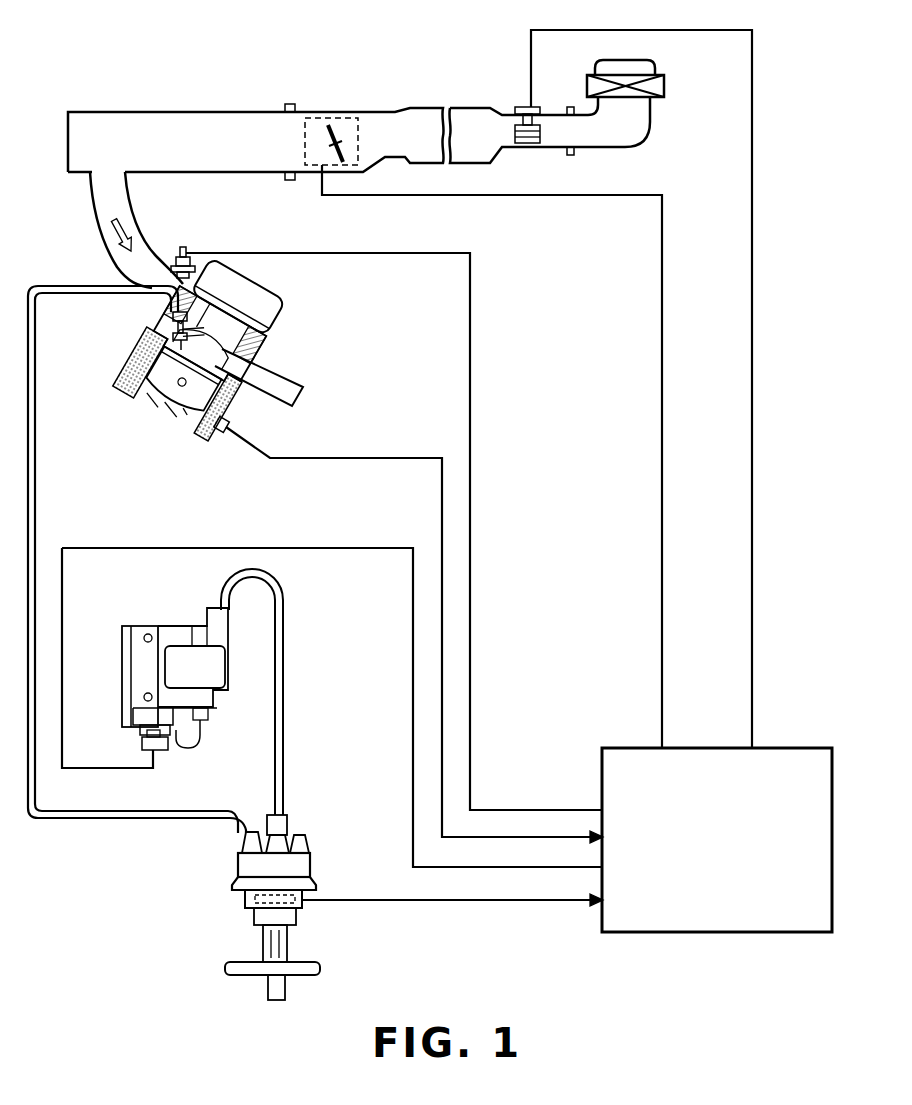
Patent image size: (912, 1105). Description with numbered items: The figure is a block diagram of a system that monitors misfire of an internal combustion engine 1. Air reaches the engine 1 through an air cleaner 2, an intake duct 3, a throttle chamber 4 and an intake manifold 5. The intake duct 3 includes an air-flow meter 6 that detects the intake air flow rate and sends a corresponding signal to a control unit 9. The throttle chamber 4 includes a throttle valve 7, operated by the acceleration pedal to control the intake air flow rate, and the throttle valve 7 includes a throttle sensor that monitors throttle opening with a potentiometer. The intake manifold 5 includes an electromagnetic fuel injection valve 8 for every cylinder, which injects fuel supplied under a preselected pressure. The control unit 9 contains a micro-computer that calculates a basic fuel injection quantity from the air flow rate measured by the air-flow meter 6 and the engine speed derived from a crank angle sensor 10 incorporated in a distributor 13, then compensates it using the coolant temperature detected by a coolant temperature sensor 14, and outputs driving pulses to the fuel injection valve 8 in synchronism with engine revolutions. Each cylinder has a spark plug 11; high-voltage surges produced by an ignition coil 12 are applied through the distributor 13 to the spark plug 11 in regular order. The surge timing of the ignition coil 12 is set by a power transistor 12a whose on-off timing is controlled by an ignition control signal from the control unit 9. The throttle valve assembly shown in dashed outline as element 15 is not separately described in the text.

The internal combustion engine 1 is at (278, 359).
The air cleaner 2 is at (657, 62).
The intake duct 3 is at (472, 108).
The throttle chamber 4 is at (390, 110).
The intake manifold 5 is at (88, 213).
The air-flow meter 6 is at (543, 112).
The throttle valve 7 is at (334, 147).
The fuel injection valve 8 is at (180, 248).
The control unit 9 is at (787, 746).
The crank angle sensor 10 is at (243, 898).
The spark plug 11 is at (172, 316).
The ignition coil 12 is at (144, 626).
The power transistor 12a is at (163, 750).
The distributor 13 is at (238, 868).
The coolant temperature sensor 14 is at (212, 440).
The throttle valve 15 is at (321, 118).